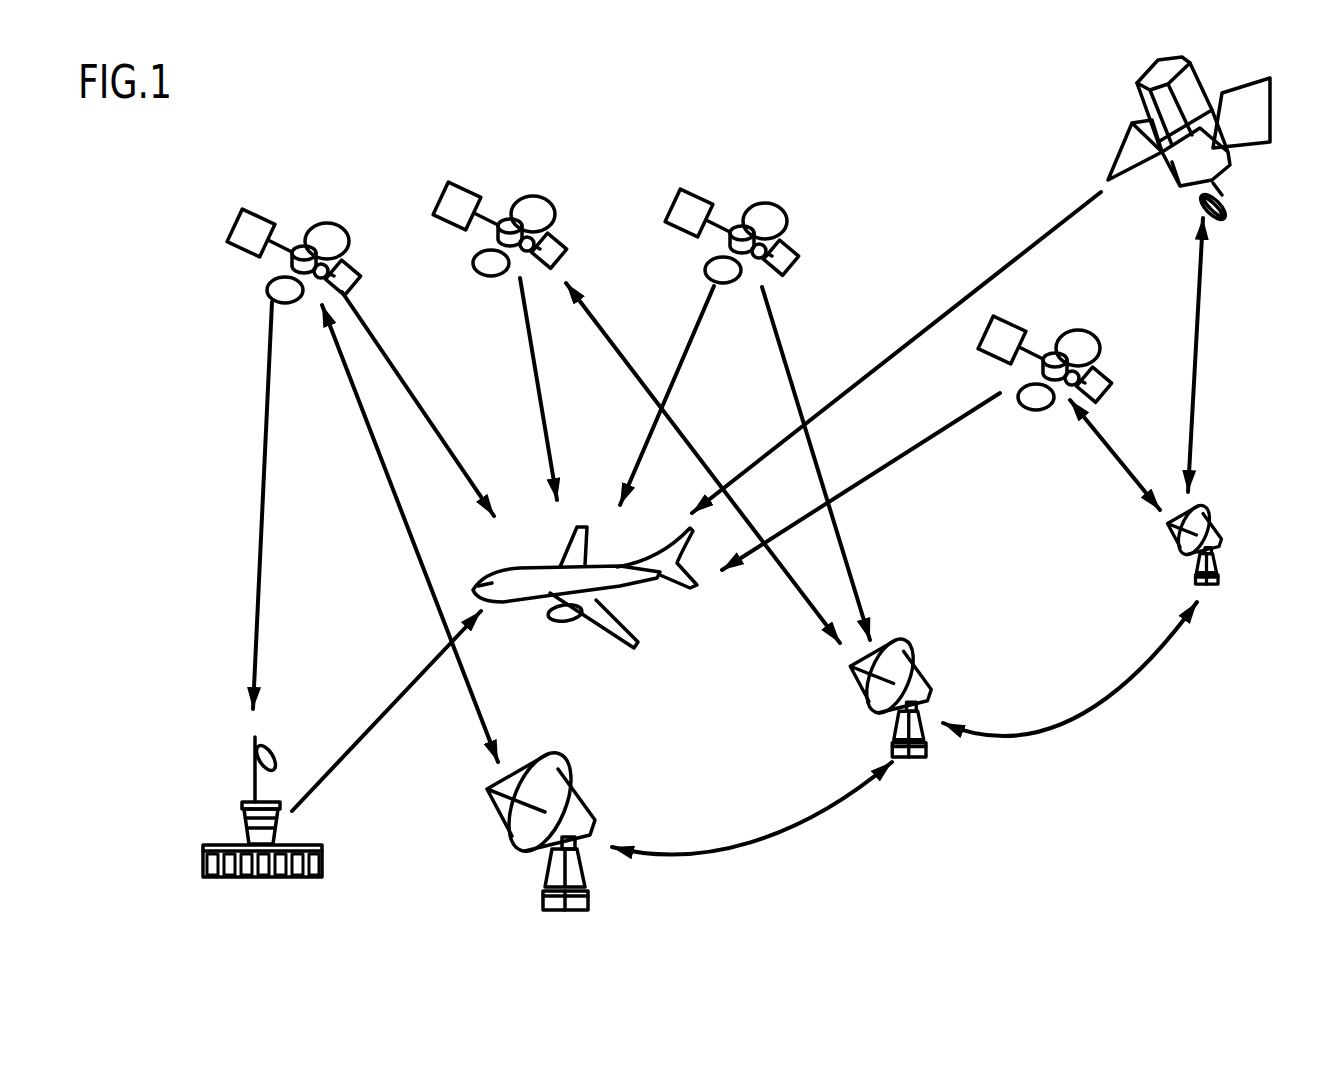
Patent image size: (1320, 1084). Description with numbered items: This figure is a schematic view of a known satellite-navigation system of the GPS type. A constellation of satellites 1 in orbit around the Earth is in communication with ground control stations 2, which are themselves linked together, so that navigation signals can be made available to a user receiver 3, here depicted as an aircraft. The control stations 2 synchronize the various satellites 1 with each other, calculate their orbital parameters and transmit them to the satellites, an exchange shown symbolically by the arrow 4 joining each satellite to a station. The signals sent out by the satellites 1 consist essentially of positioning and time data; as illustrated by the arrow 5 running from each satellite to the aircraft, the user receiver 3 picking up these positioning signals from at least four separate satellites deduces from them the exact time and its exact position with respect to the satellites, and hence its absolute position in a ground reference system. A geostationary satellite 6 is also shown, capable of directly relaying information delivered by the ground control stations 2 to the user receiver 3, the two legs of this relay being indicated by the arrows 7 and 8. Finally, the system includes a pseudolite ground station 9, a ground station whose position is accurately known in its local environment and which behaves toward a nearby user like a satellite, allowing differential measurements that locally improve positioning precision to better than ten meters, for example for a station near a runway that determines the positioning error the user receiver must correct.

The satellites 1 is at (292, 226).
The ground control stations 2 is at (600, 890).
The user receiver 3 is at (640, 586).
The arrow 4 is at (399, 506).
The arrow 5 is at (540, 392).
The geostationary satellite 6 is at (1243, 158).
The arrow 7 is at (1193, 385).
The arrow 8 is at (992, 277).
The pseudolite ground station 9 is at (230, 822).